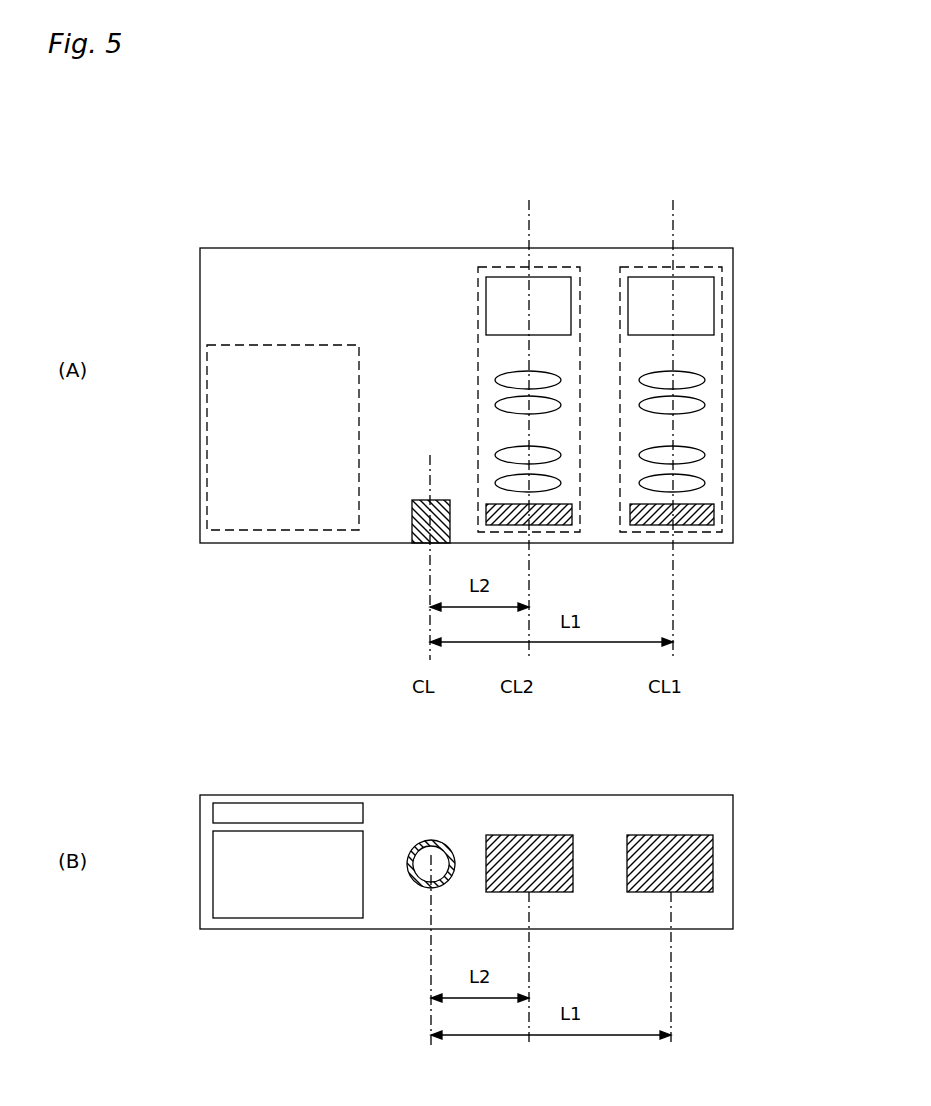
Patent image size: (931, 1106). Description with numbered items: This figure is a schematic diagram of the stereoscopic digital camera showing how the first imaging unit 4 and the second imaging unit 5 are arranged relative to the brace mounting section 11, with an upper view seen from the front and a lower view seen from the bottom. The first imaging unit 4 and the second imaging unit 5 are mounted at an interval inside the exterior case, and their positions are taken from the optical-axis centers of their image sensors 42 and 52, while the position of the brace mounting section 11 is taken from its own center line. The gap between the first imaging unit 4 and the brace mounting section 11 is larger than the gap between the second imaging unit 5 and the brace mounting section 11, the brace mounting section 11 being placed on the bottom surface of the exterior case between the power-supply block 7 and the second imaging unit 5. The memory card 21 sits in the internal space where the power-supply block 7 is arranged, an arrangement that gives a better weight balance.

The first imaging unit 4 is at (722, 360).
The second imaging unit 5 is at (478, 338).
The power-supply block 7 is at (308, 530).
The brace mounting section 11 is at (415, 543).
The memory card 21 is at (335, 803).
The image sensor 42 is at (690, 506).
The image sensor 52 is at (552, 505).